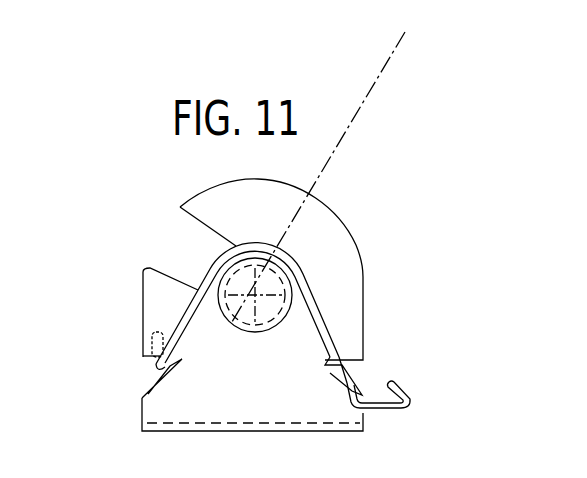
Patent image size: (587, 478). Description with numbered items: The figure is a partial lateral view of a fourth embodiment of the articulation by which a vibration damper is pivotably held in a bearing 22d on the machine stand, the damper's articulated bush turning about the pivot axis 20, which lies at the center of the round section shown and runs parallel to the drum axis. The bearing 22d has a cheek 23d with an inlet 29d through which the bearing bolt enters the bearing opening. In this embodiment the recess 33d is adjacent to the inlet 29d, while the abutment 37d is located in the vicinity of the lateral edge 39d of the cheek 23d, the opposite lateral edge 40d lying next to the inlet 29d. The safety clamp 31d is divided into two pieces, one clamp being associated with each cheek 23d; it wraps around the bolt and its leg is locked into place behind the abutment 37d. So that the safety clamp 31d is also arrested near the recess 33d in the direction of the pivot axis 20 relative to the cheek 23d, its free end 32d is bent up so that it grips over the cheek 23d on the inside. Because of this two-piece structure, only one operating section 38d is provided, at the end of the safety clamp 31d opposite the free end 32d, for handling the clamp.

The pivot axis 20 is at (253, 295).
The bearing 22d is at (352, 216).
The cheek 23d is at (322, 257).
The inlet 29d is at (207, 233).
The safety clamp 31d is at (180, 314).
The free end 32d is at (150, 337).
The recess 33d is at (150, 382).
The abutment 37d is at (348, 372).
The operating section 38d is at (413, 397).
The lateral edge 39d is at (365, 293).
The lateral edge 40d is at (142, 316).